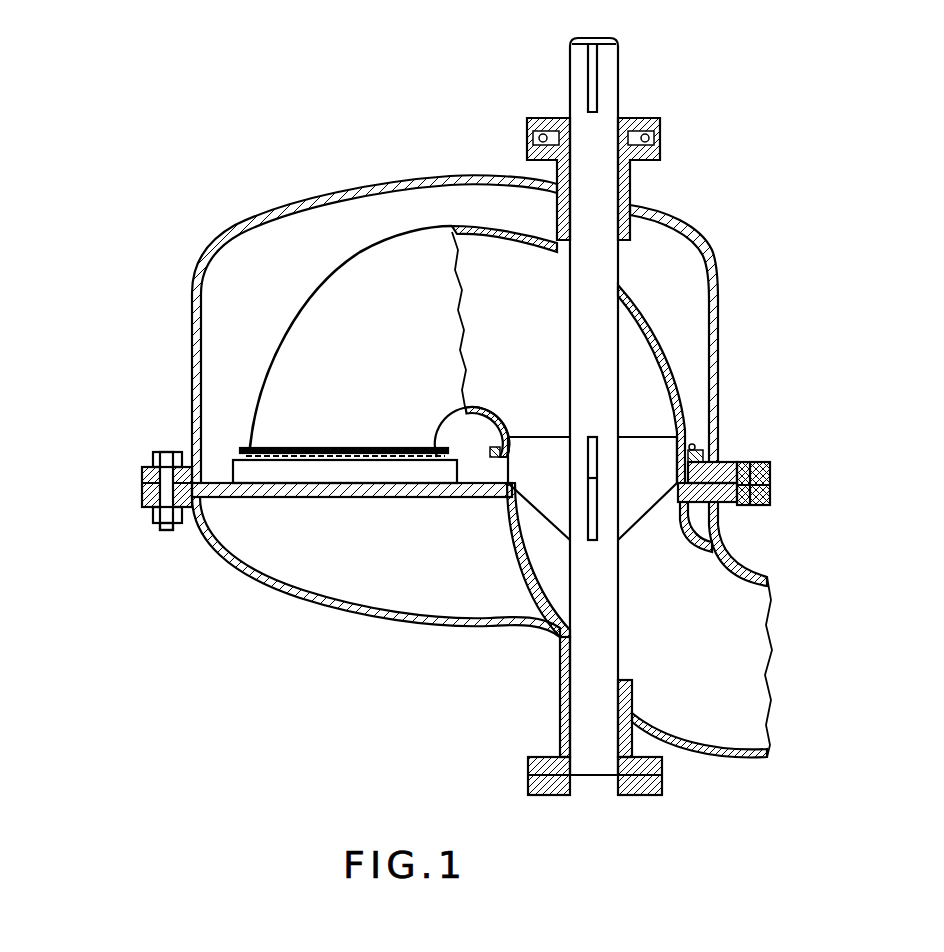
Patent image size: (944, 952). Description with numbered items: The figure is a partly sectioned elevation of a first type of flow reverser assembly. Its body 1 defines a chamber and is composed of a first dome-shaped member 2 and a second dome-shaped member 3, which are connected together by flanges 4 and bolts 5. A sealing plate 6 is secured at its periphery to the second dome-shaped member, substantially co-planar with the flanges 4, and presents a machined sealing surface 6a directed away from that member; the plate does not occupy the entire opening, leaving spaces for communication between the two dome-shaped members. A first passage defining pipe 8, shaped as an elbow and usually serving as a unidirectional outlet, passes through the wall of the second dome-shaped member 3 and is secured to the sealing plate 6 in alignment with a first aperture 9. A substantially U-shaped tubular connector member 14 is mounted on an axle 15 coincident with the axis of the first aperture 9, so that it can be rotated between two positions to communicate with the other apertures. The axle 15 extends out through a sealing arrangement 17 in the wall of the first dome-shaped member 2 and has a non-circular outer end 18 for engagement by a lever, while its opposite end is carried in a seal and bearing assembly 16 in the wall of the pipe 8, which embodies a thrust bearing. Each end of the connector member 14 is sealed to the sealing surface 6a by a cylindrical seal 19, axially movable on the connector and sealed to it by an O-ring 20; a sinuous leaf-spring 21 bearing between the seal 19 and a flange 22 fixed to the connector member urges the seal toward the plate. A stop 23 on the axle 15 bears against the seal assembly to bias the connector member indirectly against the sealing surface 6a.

The body 1 is at (232, 178).
The first dome-shaped member 2 is at (360, 183).
The second dome-shaped member 3 is at (343, 620).
The flanges 4 is at (145, 468).
The bolts 5 is at (165, 470).
The sealing plate 6 is at (252, 495).
The sealing surface 6a is at (218, 480).
The first passage defining pipe 8 is at (748, 567).
The first aperture 9 is at (510, 530).
The U-shaped tubular connector member 14 is at (345, 290).
The axle 15 is at (605, 365).
The seal and bearing assembly 16 is at (560, 727).
The sealing arrangement 17 is at (625, 187).
The outer end 18 is at (597, 80).
The cylindrical seal 19 is at (722, 466).
The O-ring 20 is at (720, 475).
The sinuous leaf-spring 21 is at (485, 455).
The flange 22 is at (246, 447).
The stop 23 is at (632, 242).